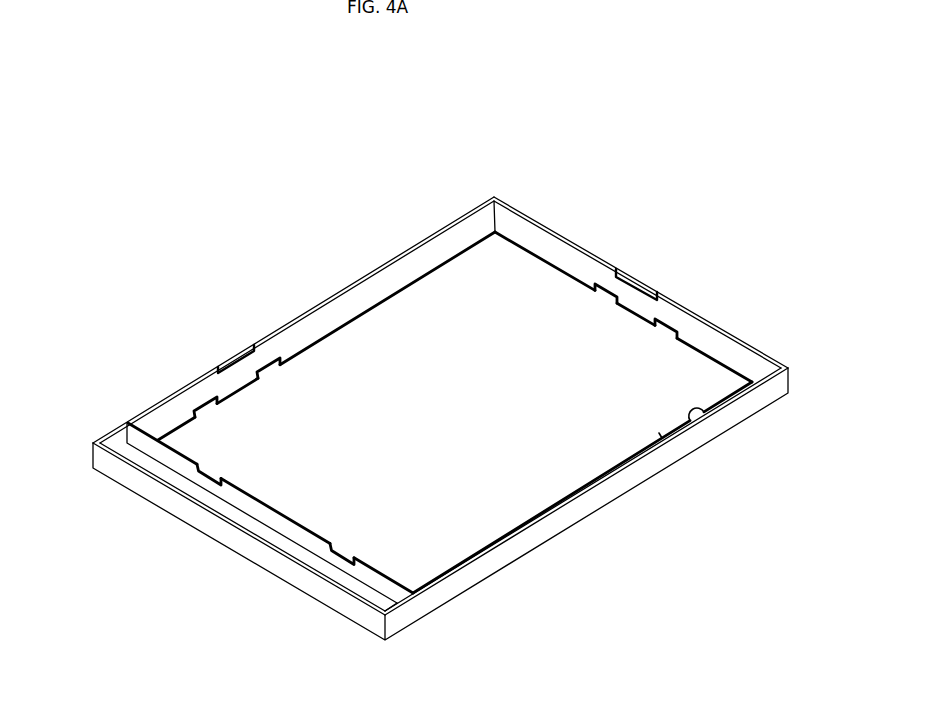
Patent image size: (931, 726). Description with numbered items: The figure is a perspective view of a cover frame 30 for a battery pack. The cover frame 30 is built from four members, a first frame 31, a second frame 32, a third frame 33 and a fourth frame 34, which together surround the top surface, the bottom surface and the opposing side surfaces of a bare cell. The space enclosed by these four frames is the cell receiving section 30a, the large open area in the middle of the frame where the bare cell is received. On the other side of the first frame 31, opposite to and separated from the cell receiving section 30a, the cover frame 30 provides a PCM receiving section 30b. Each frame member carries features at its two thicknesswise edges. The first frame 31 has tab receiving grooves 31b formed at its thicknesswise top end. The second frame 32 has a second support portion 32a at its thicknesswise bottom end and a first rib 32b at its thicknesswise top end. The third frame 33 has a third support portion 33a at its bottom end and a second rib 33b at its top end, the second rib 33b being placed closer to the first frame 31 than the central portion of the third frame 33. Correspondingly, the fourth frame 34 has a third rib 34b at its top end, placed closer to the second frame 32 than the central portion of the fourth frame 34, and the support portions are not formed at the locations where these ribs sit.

The cover frame 30 is at (209, 142).
The cell receiving section 30a is at (533, 484).
The PCM receiving section 30b is at (347, 592).
The first frame 31 is at (165, 455).
The tab receiving grooves 31b is at (340, 551).
The second frame 32 is at (563, 238).
The second support portion 32a is at (662, 331).
The first rib 32b is at (636, 279).
The third frame 33 is at (316, 305).
The third support portion 33a is at (192, 407).
The second rib 33b is at (231, 357).
The fourth frame 34 is at (647, 467).
The third rib 34b is at (714, 413).